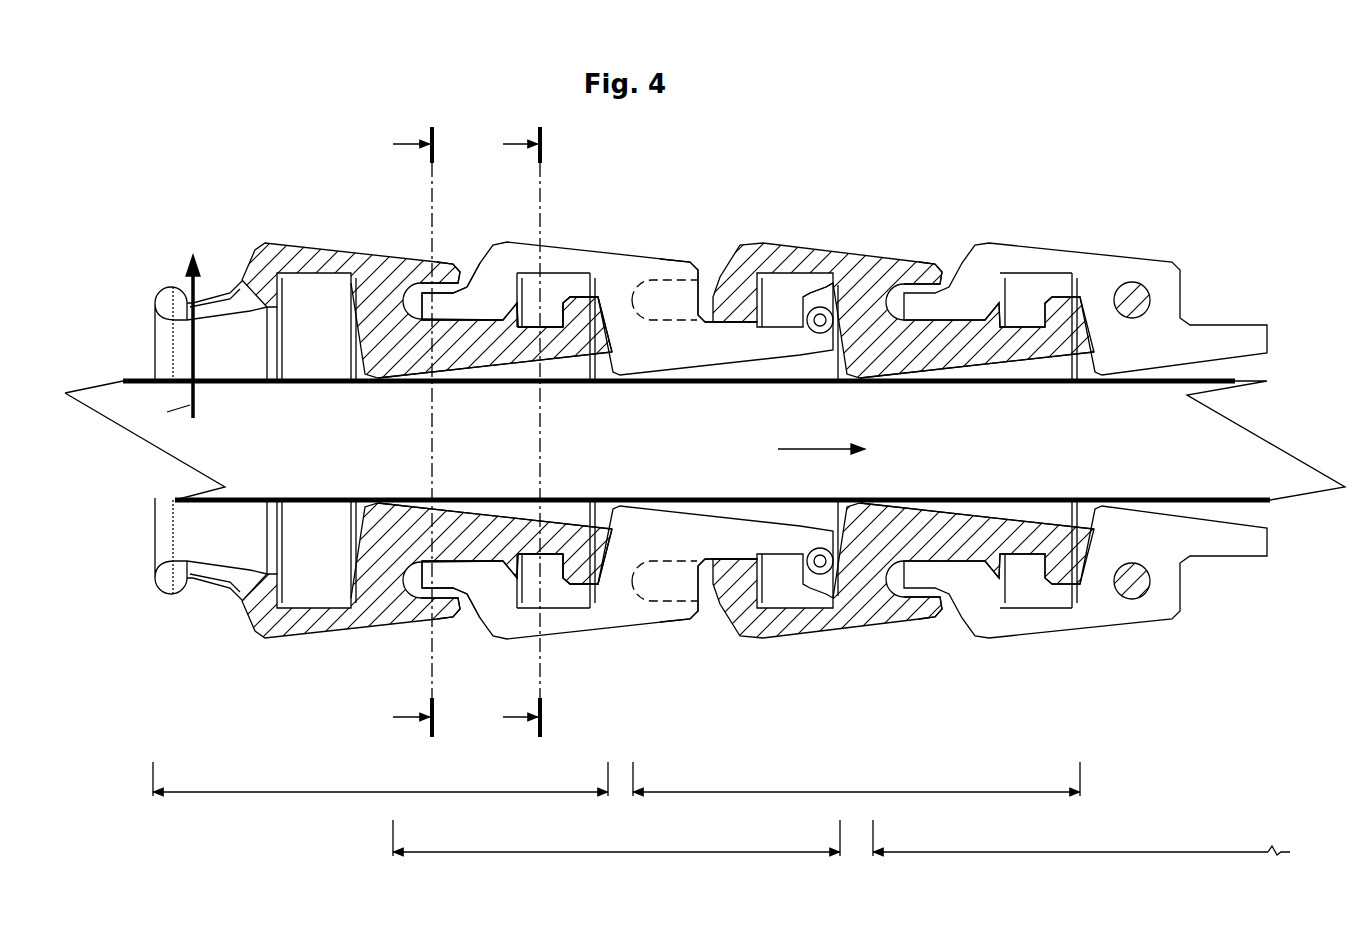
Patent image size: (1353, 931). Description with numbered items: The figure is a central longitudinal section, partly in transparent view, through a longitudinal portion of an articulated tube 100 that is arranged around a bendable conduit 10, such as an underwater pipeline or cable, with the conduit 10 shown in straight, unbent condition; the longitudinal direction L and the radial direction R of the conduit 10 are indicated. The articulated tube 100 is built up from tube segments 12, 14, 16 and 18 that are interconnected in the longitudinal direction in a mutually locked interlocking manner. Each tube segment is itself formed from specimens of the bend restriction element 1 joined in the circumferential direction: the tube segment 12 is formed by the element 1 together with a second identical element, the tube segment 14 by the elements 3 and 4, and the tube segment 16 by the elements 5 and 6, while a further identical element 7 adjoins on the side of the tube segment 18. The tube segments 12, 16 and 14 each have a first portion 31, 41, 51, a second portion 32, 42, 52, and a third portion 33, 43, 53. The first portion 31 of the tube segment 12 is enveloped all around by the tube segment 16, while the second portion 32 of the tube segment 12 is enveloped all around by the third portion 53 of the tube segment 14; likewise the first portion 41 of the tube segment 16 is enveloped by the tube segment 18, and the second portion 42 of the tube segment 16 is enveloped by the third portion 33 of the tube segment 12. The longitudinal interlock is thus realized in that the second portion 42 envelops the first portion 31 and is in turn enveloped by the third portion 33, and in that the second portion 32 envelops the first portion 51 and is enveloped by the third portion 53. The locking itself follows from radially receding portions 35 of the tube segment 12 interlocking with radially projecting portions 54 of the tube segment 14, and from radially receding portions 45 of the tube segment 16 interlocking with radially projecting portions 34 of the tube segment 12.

The articulated tube 100 is at (140, 218).
The bend restriction element 1 is at (638, 247).
The bend restriction element 3 is at (320, 237).
The bend restriction element 4 is at (282, 650).
The bend restriction element 5 is at (803, 248).
The bend restriction element 6 is at (853, 645).
The bend restriction element 7 is at (1098, 243).
The bendable conduit 10 is at (317, 385).
The tube segment 12 is at (616, 838).
The tube segment 14 is at (380, 779).
The tube segment 16 is at (856, 779).
The tube segment 18 is at (1081, 838).
The first portion 31 is at (717, 345).
The second portion 32 is at (448, 306).
The third portion 33 is at (680, 266).
The radially projecting portion 34 is at (823, 302).
The radially receding portion 35 is at (549, 575).
The first portion 41 is at (969, 345).
The second portion 42 is at (659, 308).
The third portion 43 is at (915, 266).
The radially receding portion 45 is at (792, 295).
The first portion 51 is at (522, 347).
The second portion 52 is at (167, 297).
The third portion 53 is at (443, 265).
The radially projecting portion 54 is at (582, 296).